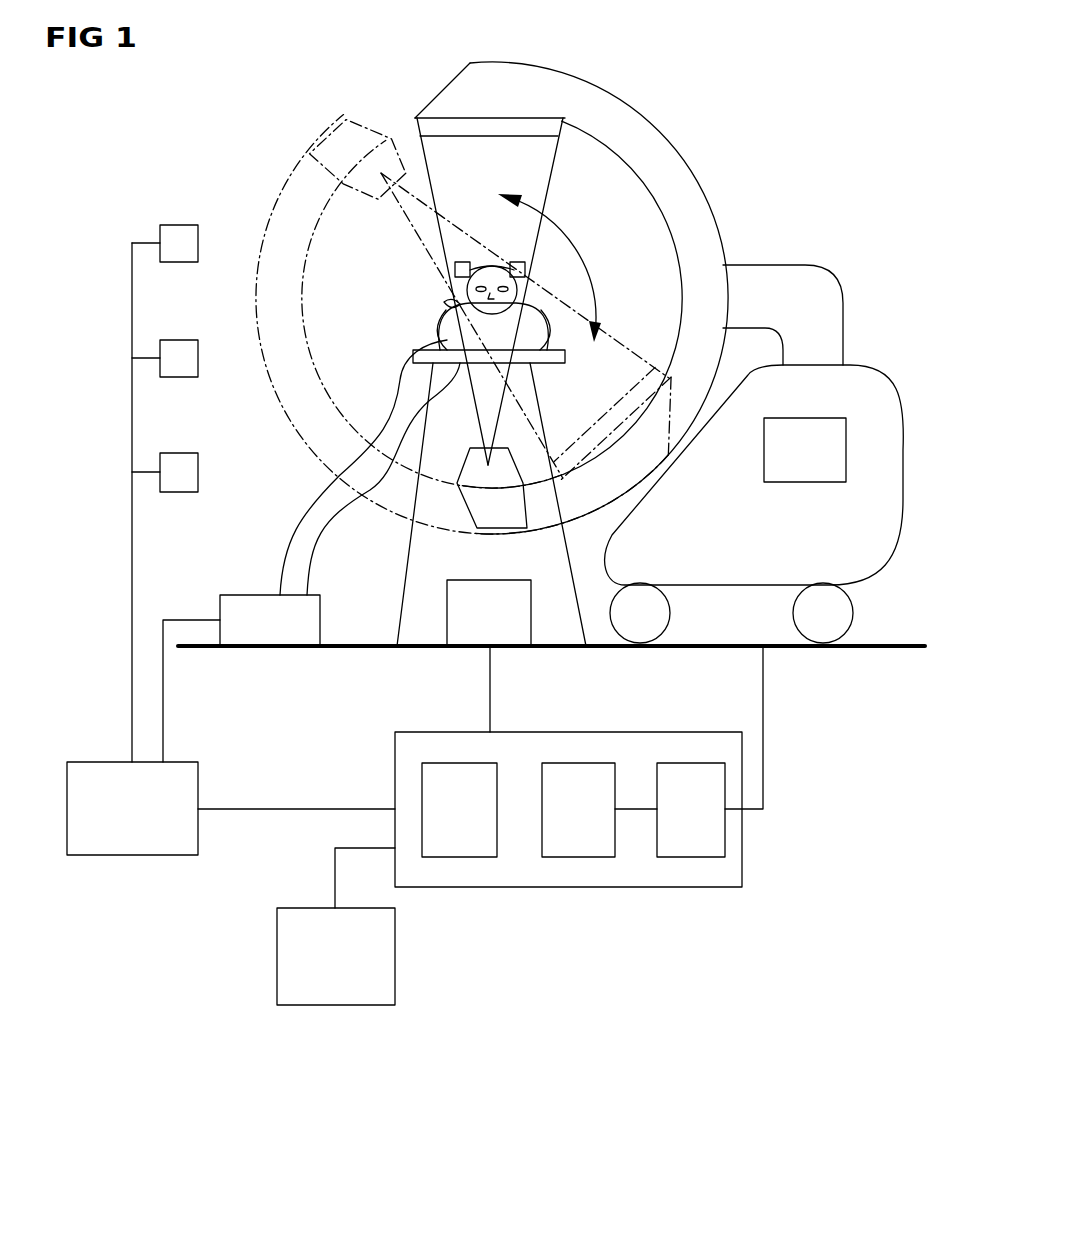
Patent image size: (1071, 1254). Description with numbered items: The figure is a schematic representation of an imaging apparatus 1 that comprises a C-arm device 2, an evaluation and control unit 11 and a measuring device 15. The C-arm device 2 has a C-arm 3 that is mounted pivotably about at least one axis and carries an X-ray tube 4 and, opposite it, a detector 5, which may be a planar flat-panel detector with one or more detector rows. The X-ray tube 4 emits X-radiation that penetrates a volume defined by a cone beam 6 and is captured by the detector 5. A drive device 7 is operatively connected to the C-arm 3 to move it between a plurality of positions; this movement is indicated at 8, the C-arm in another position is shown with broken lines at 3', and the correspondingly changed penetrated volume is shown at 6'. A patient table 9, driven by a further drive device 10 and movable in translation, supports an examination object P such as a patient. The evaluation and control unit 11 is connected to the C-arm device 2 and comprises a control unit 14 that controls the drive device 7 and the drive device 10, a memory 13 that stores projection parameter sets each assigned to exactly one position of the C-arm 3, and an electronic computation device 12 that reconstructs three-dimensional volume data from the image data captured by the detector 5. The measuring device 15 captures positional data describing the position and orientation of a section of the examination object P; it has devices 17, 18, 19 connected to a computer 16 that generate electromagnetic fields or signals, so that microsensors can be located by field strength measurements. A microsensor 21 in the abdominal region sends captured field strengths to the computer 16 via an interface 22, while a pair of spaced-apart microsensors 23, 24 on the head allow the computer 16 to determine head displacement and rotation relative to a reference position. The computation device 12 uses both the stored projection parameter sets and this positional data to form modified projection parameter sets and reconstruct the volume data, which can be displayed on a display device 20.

The imaging apparatus 1 is at (769, 89).
The C-arm device 2 is at (773, 280).
The C-arm 3 is at (595, 298).
The C-arm in another position 3' is at (433, 352).
The X-ray tube 4 is at (497, 485).
The detector 5 is at (530, 128).
The cone beam 6 is at (510, 291).
The penetrated volume in another position 6' is at (497, 301).
The drive device 7 is at (806, 484).
The movement of the C-arm 8 is at (583, 236).
The patient table 9 is at (546, 364).
The drive device 10 is at (466, 648).
The evaluation and control unit 11 is at (744, 850).
The electronic computation device 12 is at (580, 860).
The memory 13 is at (690, 860).
The control unit 14 is at (460, 860).
The measuring device 15 is at (103, 283).
The computer 16 is at (132, 858).
The device 17 is at (178, 454).
The device 18 is at (178, 341).
The device 19 is at (178, 226).
The display device 20 is at (333, 1008).
The microsensor 21 is at (447, 304).
The interface 22 is at (257, 598).
The microsensor 23 is at (462, 262).
The microsensor 24 is at (516, 262).
The examination object P is at (447, 338).